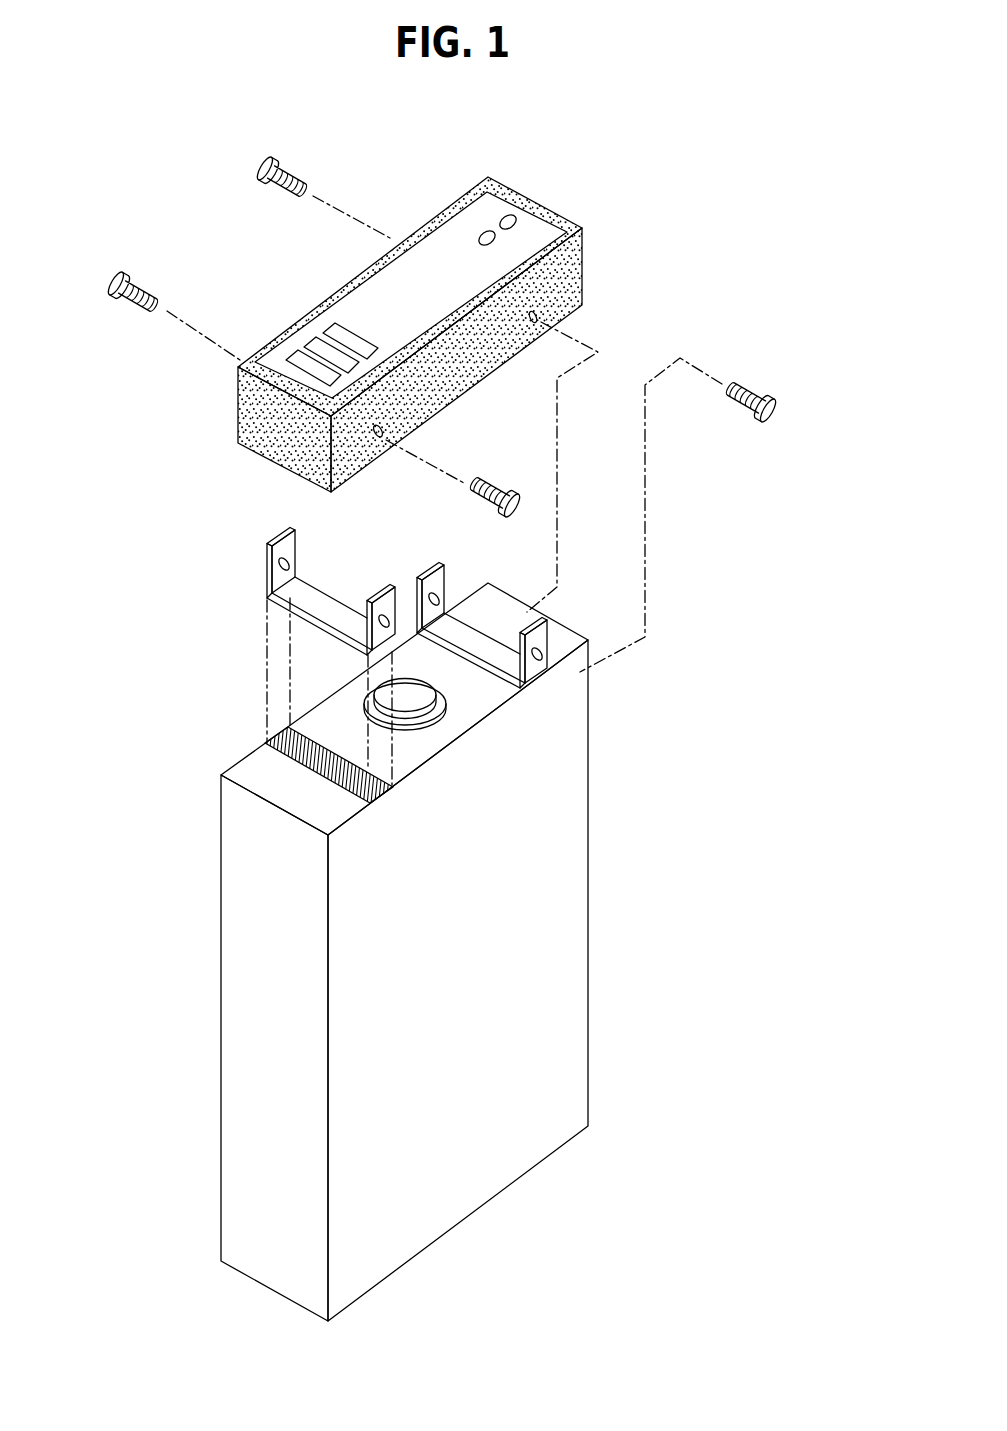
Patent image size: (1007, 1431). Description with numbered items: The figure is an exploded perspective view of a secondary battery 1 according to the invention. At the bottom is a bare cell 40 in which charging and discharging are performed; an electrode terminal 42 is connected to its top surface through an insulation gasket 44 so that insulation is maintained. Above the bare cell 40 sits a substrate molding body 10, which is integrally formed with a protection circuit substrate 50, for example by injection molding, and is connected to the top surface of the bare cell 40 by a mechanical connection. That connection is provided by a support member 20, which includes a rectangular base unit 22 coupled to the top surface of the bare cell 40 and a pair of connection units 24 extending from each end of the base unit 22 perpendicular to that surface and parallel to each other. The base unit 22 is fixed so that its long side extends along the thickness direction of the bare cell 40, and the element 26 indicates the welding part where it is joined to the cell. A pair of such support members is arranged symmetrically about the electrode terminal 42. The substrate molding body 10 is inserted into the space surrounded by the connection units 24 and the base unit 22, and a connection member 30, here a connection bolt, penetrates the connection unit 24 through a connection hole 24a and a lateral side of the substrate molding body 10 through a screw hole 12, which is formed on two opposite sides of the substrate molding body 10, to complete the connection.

The secondary battery 1 is at (772, 169).
The substrate molding body 10 is at (245, 415).
The screw hole 12 is at (380, 437).
The support member 20 is at (556, 621).
The base unit 22 is at (292, 569).
The connection unit 24 is at (292, 569).
The connection hole 24a is at (272, 538).
The welding part 26 is at (280, 733).
The connection member 30 is at (744, 385).
The bare cell 40 is at (575, 882).
The electrode terminal 42 is at (417, 703).
The insulation gasket 44 is at (447, 698).
The protection circuit substrate 50 is at (461, 232).